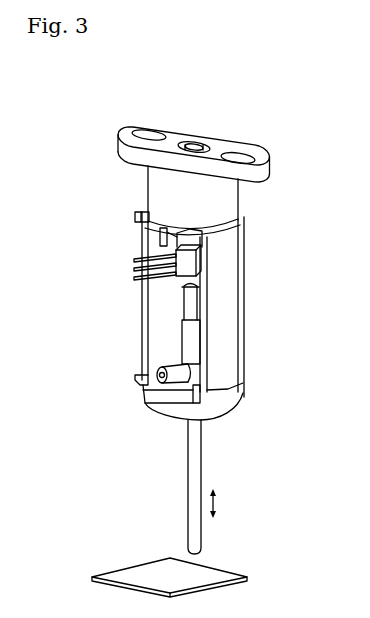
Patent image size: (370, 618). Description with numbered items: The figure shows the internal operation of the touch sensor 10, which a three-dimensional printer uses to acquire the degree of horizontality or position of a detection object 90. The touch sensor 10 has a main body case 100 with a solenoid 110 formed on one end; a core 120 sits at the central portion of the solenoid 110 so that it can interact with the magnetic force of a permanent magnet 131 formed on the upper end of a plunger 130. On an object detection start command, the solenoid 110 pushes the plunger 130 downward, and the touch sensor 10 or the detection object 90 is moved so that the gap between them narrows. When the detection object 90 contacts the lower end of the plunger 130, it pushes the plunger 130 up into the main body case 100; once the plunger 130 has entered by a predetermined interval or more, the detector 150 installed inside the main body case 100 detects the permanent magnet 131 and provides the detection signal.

The touch sensor 10 is at (92, 194).
The detection object 90 is at (150, 577).
The main body case 100 is at (232, 308).
The solenoid 110 is at (208, 202).
The core 120 is at (199, 143).
The plunger 130 is at (193, 448).
The permanent magnet 131 is at (183, 306).
The detector 150 is at (187, 265).